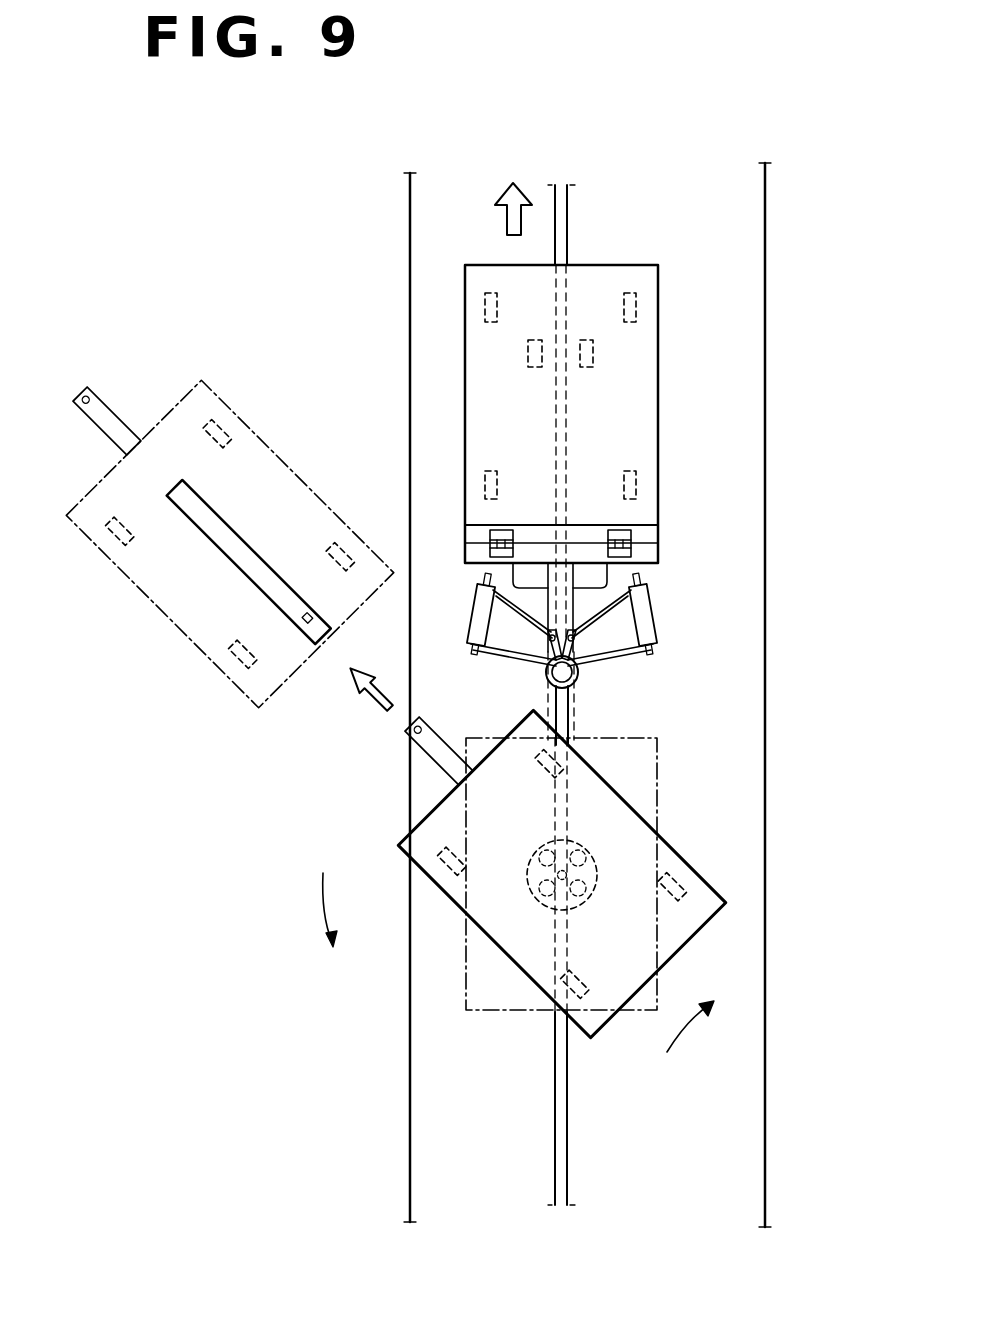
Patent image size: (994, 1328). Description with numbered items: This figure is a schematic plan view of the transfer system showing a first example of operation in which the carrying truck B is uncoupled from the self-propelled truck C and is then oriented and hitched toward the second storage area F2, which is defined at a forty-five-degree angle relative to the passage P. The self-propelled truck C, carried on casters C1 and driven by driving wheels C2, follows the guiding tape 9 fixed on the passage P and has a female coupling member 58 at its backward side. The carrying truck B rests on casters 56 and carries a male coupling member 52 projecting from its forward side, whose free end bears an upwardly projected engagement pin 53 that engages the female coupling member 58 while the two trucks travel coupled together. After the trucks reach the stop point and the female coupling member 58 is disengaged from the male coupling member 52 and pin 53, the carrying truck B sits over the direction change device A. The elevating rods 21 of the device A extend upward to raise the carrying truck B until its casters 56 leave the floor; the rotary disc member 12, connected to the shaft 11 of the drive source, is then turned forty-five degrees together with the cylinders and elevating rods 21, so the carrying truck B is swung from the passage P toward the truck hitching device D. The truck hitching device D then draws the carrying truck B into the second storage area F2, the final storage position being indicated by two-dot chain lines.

The guiding tape 9 is at (566, 212).
The passage P is at (740, 262).
The self-propelled truck C is at (660, 346).
The casters C1 is at (484, 300).
The driving wheels C2 is at (527, 355).
The male coupling member 52 is at (578, 717).
The engagement pin 53 is at (582, 678).
The female coupling member 58 is at (652, 601).
The carrying truck B is at (193, 648).
The casters 56 is at (673, 891).
The truck hitching device D is at (213, 540).
The second storage area F2 is at (52, 594).
The direction change device A is at (536, 894).
The shaft 11 is at (584, 870).
The elevating rods 21 is at (545, 853).
The rotary disc member 12 is at (561, 873).